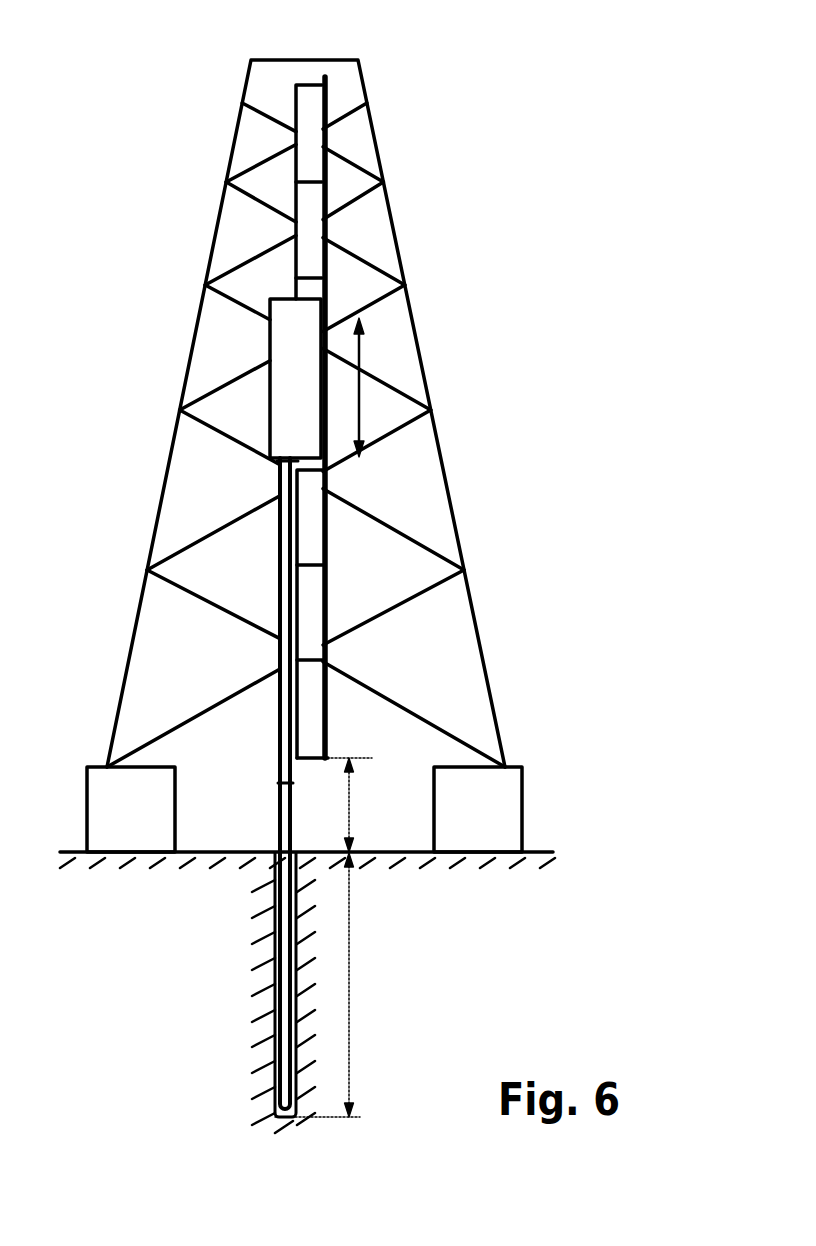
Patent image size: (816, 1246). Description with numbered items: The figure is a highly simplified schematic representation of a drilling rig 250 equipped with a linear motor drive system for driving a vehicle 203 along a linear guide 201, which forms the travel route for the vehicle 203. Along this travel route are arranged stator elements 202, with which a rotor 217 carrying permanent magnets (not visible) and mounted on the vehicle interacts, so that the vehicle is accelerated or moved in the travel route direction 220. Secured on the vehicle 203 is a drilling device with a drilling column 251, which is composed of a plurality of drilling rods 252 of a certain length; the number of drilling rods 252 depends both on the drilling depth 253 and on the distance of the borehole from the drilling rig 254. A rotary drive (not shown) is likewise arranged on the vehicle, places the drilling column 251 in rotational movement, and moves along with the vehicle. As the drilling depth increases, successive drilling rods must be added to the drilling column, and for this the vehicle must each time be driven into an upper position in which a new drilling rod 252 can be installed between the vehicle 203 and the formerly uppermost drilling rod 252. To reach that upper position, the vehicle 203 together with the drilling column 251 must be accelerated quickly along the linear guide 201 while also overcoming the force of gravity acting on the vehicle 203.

The linear guide 201 is at (328, 82).
The stator elements 202 is at (320, 207).
The vehicle 203 is at (215, 475).
The rotor 217 is at (268, 332).
The travel route direction 220 is at (363, 390).
The drilling rig 250 is at (233, 145).
The drilling column 251 is at (252, 586).
The drilling rods 252 is at (290, 708).
The drilling depth 253 is at (350, 805).
The distance of the borehole from the drilling rig 254 is at (349, 978).